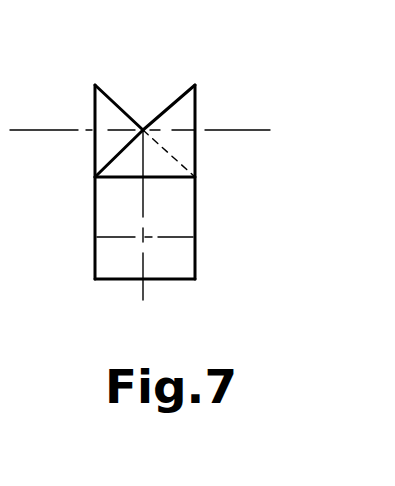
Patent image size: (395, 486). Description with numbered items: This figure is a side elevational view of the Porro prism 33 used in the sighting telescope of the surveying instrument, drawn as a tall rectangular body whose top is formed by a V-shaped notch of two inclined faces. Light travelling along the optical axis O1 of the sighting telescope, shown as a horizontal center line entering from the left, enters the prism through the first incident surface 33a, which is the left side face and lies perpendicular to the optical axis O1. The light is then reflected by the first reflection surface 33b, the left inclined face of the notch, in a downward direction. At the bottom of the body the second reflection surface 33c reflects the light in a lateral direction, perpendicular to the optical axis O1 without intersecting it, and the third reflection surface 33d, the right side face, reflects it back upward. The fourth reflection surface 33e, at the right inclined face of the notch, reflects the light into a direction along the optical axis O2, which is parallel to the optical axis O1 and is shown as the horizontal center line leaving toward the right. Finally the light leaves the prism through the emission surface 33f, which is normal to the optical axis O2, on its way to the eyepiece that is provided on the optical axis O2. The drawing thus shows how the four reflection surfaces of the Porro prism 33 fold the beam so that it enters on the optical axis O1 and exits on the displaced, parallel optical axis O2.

The Porro prism 33 is at (207, 50).
The first incident surface 33a is at (92, 108).
The first reflection surface 33b is at (122, 104).
The second reflection surface 33c is at (176, 265).
The third reflection surface 33d is at (180, 221).
The fourth reflection surface 33e is at (160, 107).
The emission surface 33f is at (198, 98).
The optical axis O1 is at (52, 132).
The optical axis O2 is at (268, 129).